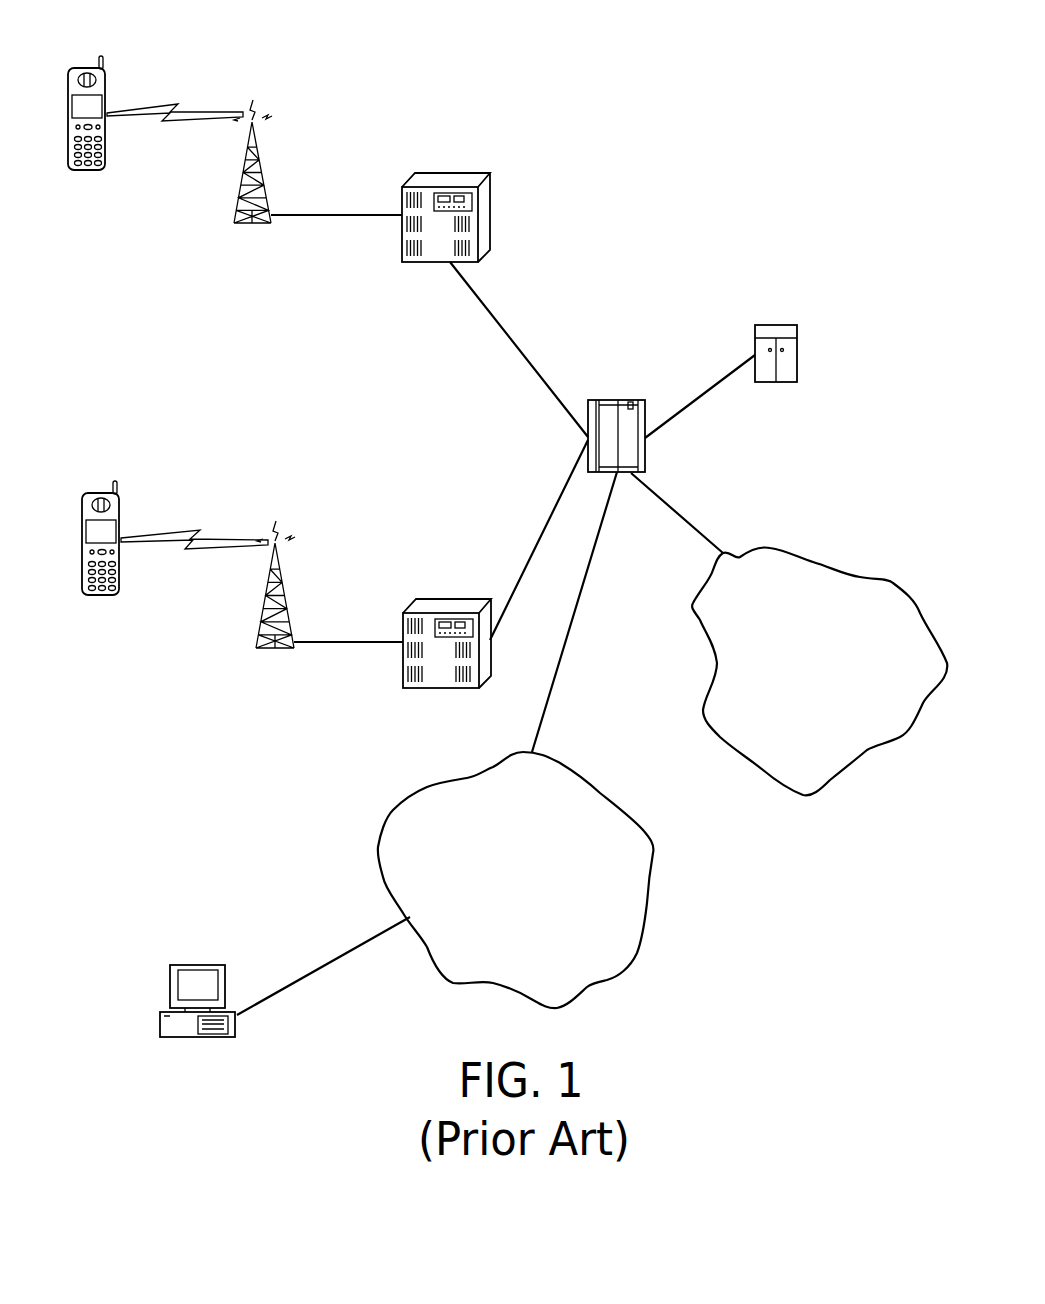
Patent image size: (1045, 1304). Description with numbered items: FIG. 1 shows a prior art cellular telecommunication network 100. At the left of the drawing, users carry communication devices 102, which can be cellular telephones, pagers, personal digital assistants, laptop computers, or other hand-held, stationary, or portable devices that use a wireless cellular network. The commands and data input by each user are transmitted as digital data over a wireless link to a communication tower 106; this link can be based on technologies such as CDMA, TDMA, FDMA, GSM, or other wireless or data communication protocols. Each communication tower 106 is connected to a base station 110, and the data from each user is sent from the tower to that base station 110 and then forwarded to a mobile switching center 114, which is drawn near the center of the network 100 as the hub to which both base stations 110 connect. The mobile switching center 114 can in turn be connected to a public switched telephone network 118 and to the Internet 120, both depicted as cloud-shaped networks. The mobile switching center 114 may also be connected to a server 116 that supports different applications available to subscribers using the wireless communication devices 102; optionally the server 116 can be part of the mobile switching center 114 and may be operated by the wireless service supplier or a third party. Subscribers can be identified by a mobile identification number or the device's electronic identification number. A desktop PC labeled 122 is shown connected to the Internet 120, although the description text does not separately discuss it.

The cellular telecommunication network 100 is at (575, 80).
The communication device 102 is at (108, 105).
The communication tower 106 is at (265, 148).
The base station 110 is at (490, 200).
The mobile switching center 114 is at (633, 400).
The server 116 is at (790, 325).
The public switched telephone network 118 is at (817, 562).
The Internet 120 is at (600, 793).
The desktop PC 122 is at (168, 985).